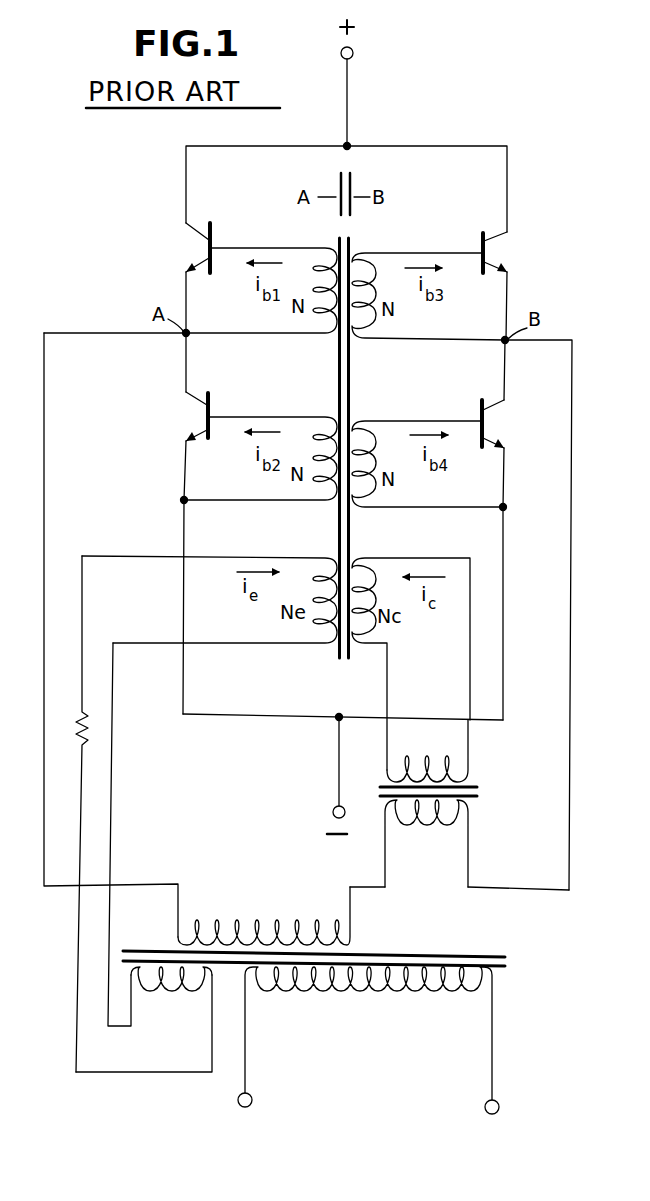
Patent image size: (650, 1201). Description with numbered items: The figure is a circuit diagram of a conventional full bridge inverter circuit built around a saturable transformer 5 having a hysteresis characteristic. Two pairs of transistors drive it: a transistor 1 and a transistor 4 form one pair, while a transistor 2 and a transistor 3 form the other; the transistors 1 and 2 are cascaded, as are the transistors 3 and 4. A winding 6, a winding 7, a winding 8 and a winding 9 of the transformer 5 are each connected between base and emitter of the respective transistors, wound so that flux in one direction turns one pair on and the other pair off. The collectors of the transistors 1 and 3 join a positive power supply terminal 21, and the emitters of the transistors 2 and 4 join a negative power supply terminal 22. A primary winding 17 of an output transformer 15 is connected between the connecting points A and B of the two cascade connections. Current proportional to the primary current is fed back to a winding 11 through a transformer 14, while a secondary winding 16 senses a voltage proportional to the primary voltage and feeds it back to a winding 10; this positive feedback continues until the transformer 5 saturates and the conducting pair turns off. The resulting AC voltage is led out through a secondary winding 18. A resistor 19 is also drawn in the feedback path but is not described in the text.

The transistor 1 is at (207, 248).
The transistor 2 is at (205, 417).
The transistor 3 is at (487, 253).
The transistor 4 is at (486, 422).
The saturable transformer 5 is at (351, 238).
The winding 6 is at (316, 277).
The winding 7 is at (316, 446).
The winding 8 is at (373, 284).
The winding 9 is at (373, 451).
The winding 10 is at (312, 593).
The winding 11 is at (375, 594).
The transformer 14 is at (478, 791).
The output transformer 15 is at (500, 959).
The secondary winding 16 is at (167, 984).
The primary winding 17 is at (281, 926).
The secondary winding 18 is at (353, 985).
The resistor 19 is at (88, 729).
The positive power supply terminal 21 is at (354, 52).
The negative power supply terminal 22 is at (333, 808).